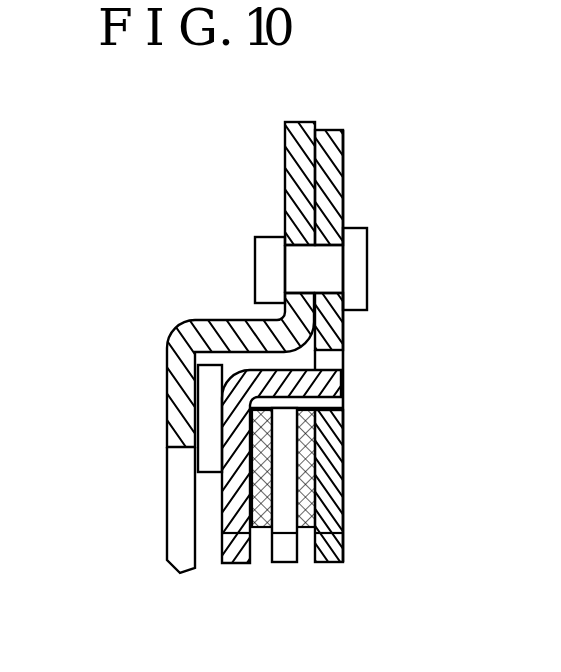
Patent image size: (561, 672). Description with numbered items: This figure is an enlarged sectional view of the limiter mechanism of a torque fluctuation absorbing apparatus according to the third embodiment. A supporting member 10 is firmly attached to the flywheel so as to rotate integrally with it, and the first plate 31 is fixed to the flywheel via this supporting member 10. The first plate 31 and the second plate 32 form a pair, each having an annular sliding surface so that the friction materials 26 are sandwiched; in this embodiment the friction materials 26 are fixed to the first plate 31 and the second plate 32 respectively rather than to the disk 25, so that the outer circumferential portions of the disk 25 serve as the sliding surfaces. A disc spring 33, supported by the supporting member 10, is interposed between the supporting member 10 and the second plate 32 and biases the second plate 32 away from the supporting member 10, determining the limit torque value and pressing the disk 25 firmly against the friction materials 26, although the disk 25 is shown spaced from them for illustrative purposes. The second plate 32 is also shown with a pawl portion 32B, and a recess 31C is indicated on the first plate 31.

The supporting member 10 is at (295, 143).
The first plate 31 is at (322, 128).
The recess 31C is at (330, 362).
The pawl portion 32B is at (257, 320).
The disc spring 33 is at (207, 430).
The second plate 32 is at (237, 522).
The friction material 26 is at (303, 468).
The disk 25 is at (283, 527).